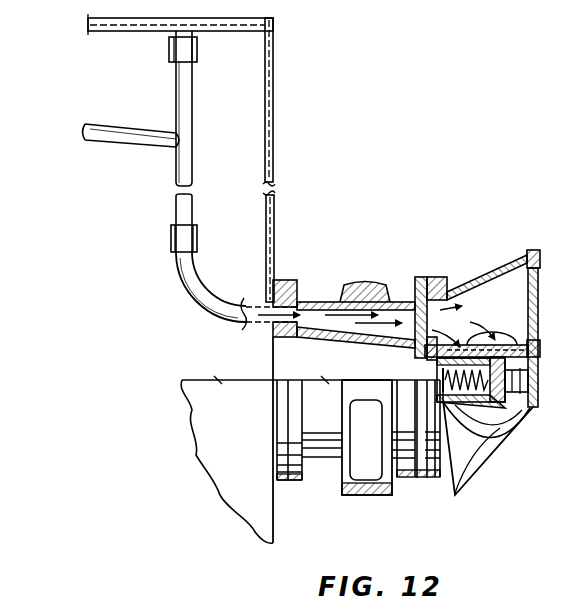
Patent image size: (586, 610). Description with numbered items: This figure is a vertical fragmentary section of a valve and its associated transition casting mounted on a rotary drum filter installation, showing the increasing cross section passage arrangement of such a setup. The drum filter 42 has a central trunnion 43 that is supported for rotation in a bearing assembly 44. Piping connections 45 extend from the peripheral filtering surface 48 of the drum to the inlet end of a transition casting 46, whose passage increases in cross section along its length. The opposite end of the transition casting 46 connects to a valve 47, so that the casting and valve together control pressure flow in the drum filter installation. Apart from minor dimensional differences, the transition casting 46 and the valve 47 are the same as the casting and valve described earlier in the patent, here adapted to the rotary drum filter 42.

The drum filter 42 is at (282, 133).
The central trunnion 43 is at (322, 450).
The bearing assembly 44 is at (383, 492).
The piping connections 45 is at (193, 107).
The transition casting 46 is at (318, 302).
The valve 47 is at (472, 292).
The peripheral filtering surface 48 is at (258, 18).